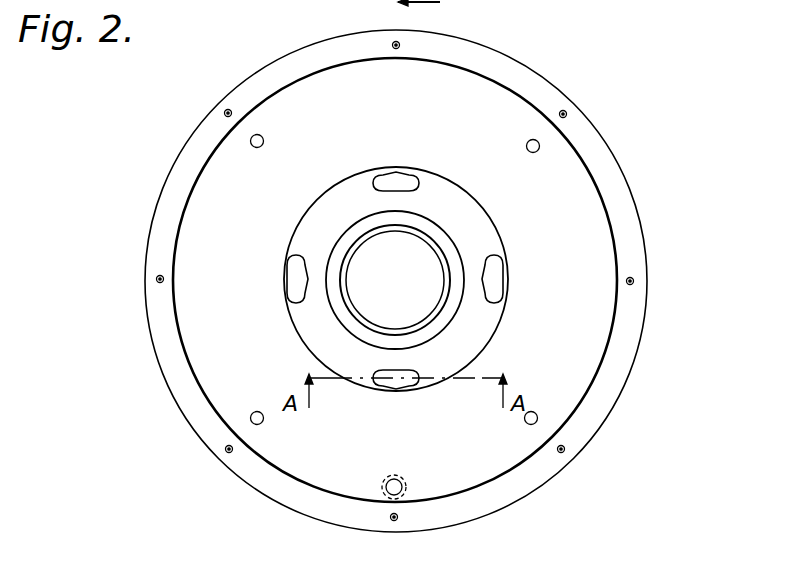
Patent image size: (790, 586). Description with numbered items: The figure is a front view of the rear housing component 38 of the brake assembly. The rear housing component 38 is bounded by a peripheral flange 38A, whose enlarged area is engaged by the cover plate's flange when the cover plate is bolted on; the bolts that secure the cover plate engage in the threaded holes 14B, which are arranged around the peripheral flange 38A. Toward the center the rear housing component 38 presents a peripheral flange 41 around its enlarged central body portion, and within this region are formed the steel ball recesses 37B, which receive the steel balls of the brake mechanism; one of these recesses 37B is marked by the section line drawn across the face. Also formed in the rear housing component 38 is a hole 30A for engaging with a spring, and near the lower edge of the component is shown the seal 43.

The threaded holes 14B is at (566, 115).
The hole 30A is at (250, 141).
The steel ball recess 37B is at (397, 383).
The rear housing component 38 is at (560, 478).
The peripheral flange 38A is at (588, 422).
The peripheral flange 41 is at (445, 247).
The seal 43 is at (385, 493).